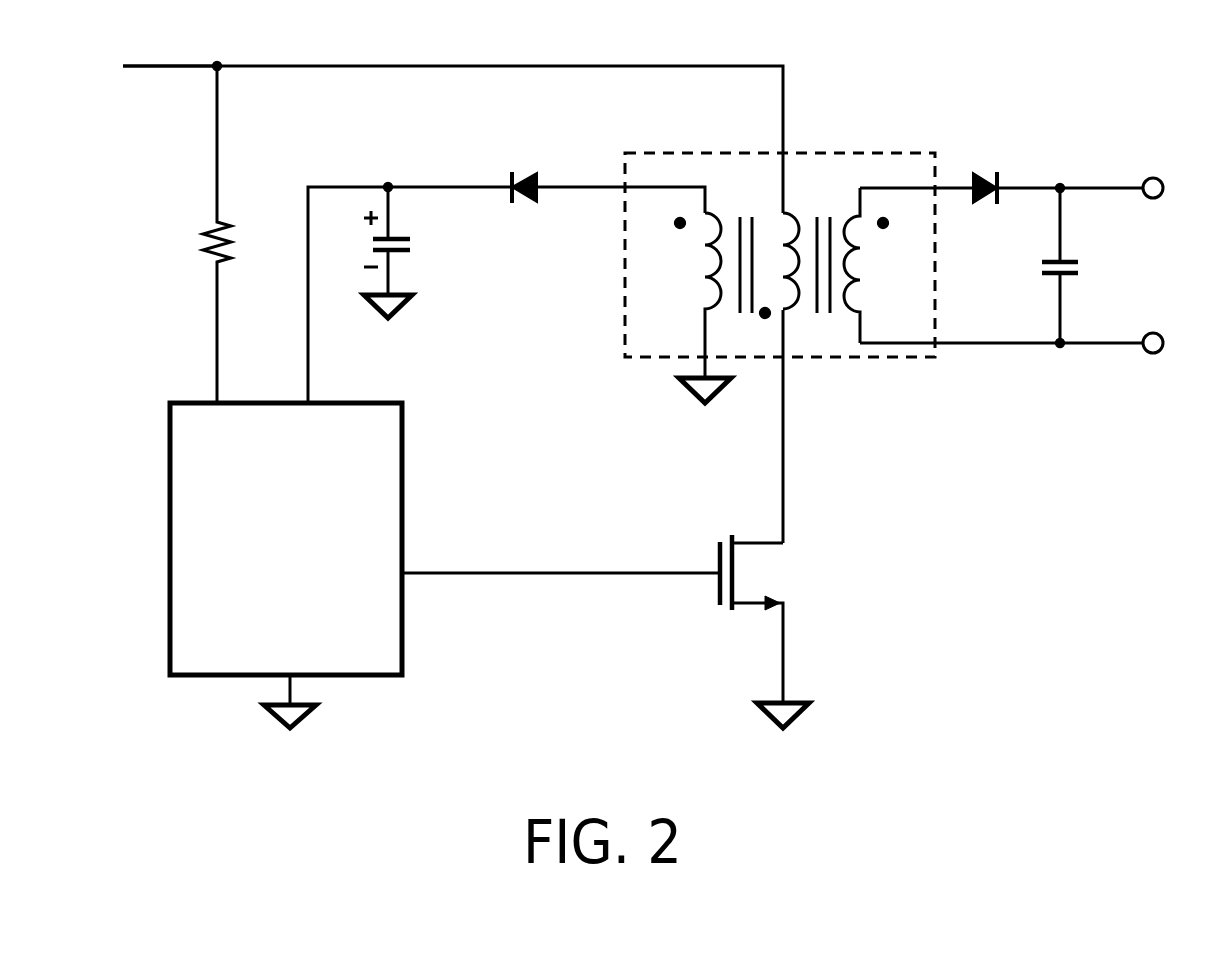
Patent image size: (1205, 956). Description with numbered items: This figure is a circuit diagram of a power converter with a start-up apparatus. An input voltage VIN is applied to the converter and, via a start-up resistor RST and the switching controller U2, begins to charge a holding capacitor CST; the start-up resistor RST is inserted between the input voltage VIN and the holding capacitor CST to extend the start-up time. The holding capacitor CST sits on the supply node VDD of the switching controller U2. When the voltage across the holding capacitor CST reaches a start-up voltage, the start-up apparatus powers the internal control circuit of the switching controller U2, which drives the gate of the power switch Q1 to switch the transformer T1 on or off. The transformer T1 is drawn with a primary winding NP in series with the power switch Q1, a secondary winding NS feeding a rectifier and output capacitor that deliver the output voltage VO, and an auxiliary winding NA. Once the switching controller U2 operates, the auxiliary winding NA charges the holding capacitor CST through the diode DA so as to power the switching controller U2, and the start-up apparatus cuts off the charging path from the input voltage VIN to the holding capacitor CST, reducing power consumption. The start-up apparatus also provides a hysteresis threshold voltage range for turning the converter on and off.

The input voltage VIN is at (139, 60).
The start-up resistor RST is at (184, 234).
The supply voltage VDD is at (317, 177).
The holding capacitor CST is at (418, 252).
The diode DA is at (523, 164).
The transformer T1 is at (780, 257).
The auxiliary winding NA is at (684, 308).
The primary winding NP is at (763, 243).
The secondary winding NS is at (881, 265).
The output voltage VO is at (1154, 265).
The switching controller U2 is at (170, 452).
The power switch Q1 is at (773, 631).